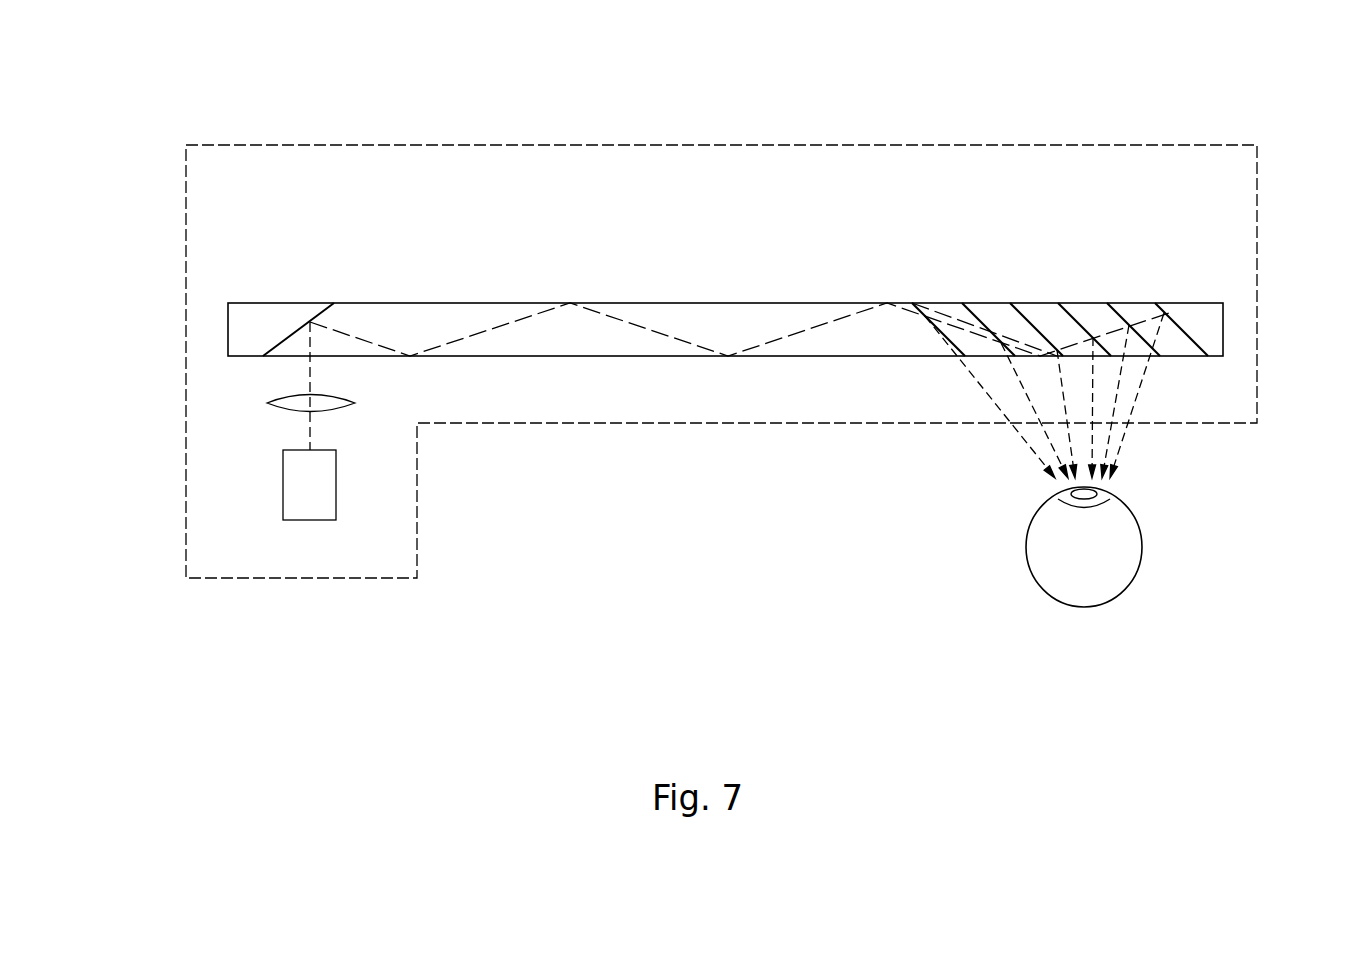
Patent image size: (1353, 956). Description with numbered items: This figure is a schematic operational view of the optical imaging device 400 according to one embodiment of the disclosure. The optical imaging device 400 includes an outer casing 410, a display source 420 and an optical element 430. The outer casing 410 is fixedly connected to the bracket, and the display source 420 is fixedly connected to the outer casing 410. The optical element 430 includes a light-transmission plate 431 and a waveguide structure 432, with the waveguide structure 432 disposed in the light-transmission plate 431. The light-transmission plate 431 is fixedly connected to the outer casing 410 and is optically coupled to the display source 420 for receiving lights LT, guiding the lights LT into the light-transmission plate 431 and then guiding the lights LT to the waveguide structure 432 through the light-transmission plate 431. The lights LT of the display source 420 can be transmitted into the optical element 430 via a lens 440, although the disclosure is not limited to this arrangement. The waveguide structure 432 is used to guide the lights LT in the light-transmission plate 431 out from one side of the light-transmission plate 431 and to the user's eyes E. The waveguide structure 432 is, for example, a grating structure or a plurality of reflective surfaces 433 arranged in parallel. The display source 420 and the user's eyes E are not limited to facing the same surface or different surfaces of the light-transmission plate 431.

The optical imaging device 400 is at (1307, 78).
The outer casing 410 is at (1235, 208).
The display source 420 is at (310, 512).
The optical element 430 is at (1085, 203).
The light-transmission plate 431 is at (782, 322).
The waveguide structure 432 is at (1182, 243).
The reflective surfaces 433 is at (980, 303).
The lens 440 is at (285, 402).
The lights LT is at (652, 330).
The user's eyes E is at (1087, 590).